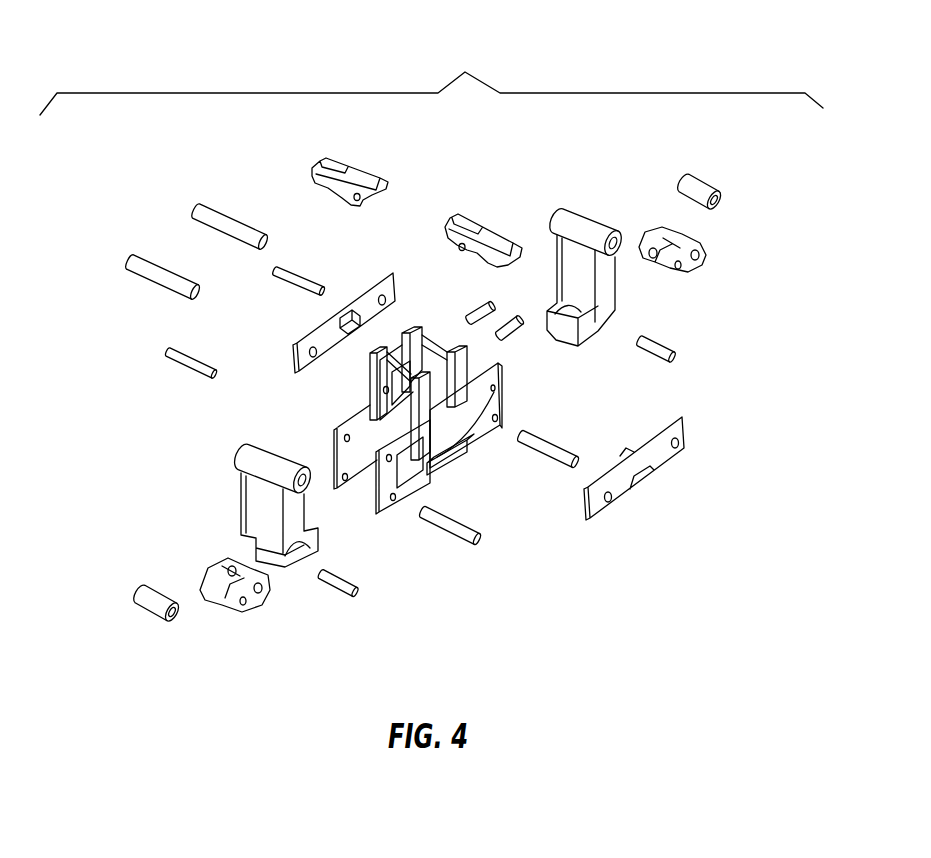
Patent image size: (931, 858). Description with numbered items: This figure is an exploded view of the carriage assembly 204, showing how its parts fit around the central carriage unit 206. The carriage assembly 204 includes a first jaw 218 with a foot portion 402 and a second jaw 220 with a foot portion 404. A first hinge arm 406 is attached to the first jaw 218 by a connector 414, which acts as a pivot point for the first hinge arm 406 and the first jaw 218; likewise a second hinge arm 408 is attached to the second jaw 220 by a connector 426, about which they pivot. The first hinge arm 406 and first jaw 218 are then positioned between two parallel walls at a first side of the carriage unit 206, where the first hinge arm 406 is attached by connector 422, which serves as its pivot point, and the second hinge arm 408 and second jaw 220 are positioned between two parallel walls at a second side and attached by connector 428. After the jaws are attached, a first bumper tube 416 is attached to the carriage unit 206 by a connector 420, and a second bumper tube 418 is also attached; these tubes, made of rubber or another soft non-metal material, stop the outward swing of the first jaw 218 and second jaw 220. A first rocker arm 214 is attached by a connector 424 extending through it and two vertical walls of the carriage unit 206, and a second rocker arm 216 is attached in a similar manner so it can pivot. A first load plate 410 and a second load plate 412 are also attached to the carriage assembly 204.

The carriage assembly 204 is at (220, 40).
The carriage unit 206 is at (332, 438).
The first rocker arm 214 is at (475, 232).
The second rocker arm 216 is at (355, 175).
The first jaw 218 is at (282, 511).
The second jaw 220 is at (564, 250).
The foot portion 402 is at (315, 542).
The foot portion 404 is at (563, 303).
The first hinge arm 406 is at (212, 567).
The second hinge arm 408 is at (707, 247).
The first load plate 410 is at (663, 458).
The second load plate 412 is at (306, 328).
The connector 414 is at (340, 593).
The first bumper tube 416 is at (152, 612).
The second bumper tube 418 is at (705, 175).
The connector 420 is at (188, 370).
The connector 422 is at (457, 537).
The connector 424 is at (510, 340).
The connector 426 is at (645, 352).
The connector 428 is at (557, 460).